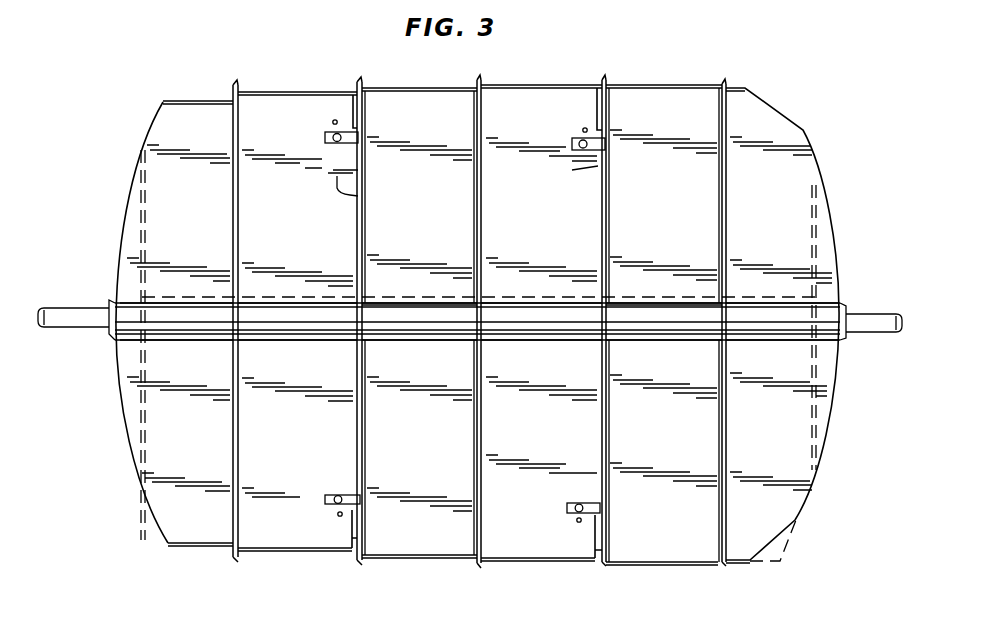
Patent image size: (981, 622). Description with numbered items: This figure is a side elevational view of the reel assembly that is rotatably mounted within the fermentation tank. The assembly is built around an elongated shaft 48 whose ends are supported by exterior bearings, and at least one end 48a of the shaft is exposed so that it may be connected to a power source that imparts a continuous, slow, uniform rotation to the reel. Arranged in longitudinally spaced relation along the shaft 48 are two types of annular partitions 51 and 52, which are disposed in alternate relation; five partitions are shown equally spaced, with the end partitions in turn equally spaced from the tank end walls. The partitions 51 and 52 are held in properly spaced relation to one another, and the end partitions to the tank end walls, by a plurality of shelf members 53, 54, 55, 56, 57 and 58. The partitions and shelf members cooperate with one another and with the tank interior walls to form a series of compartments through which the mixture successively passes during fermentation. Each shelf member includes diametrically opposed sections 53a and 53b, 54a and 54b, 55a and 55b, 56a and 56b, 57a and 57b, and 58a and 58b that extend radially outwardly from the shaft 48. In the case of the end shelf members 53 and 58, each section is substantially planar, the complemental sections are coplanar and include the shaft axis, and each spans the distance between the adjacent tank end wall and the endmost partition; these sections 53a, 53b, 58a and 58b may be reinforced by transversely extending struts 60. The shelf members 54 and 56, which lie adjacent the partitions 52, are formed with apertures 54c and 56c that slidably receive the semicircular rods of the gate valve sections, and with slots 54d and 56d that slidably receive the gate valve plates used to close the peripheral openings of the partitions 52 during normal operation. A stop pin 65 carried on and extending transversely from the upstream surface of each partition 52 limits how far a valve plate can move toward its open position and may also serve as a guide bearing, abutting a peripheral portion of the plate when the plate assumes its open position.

The shaft 48 is at (142, 327).
The end of shaft 48a is at (57, 313).
The annular partition 51 is at (235, 166).
The annular partition 52 is at (453, 179).
The shelf member 53 is at (174, 355).
The section of shelf member 53a is at (204, 429).
The section of shelf member 53b is at (197, 243).
The shelf member 54 is at (297, 338).
The section of shelf member 54a is at (304, 428).
The section of shelf member 54b is at (300, 238).
The aperture 54c is at (332, 122).
The slot 54d is at (352, 113).
The shelf member 55 is at (419, 347).
The section of shelf member 55a is at (426, 428).
The section of shelf member 55b is at (429, 226).
The shelf member 56 is at (541, 333).
The section of shelf member 56a is at (550, 427).
The section of shelf member 56b is at (550, 237).
The aperture 56c is at (582, 130).
The slot 56d is at (594, 103).
The shelf member 57 is at (664, 347).
The section of shelf member 57a is at (674, 437).
The section of shelf member 57b is at (670, 234).
The shelf member 58 is at (782, 351).
The section of shelf member 58a is at (784, 429).
The section of shelf member 58b is at (782, 234).
The strut 60 is at (140, 228).
The stop pin 65 is at (323, 139).